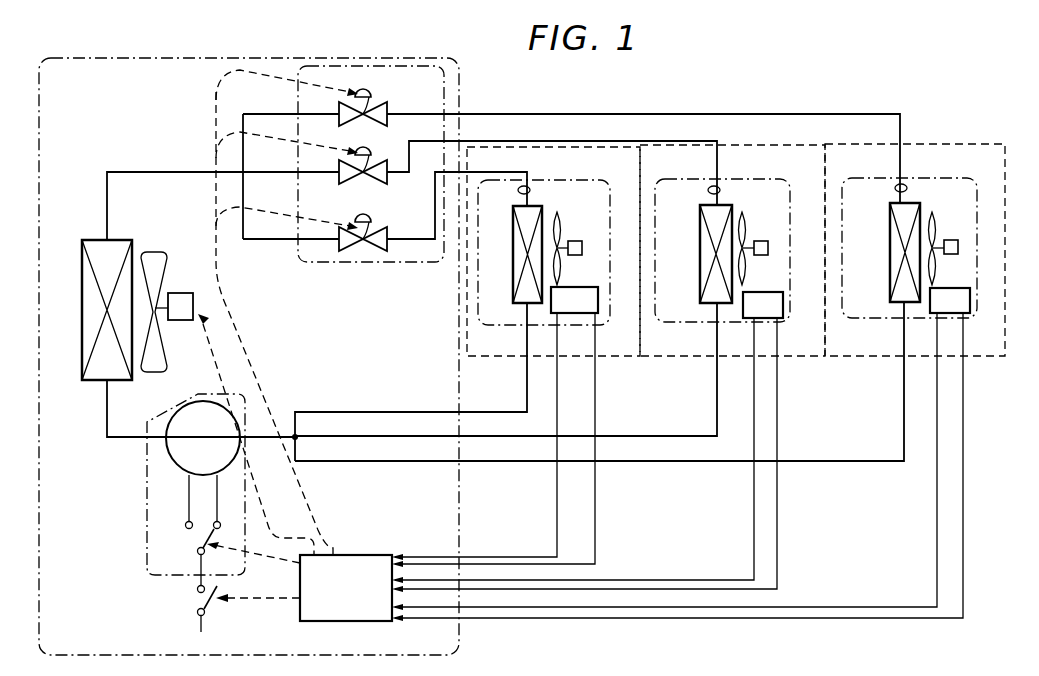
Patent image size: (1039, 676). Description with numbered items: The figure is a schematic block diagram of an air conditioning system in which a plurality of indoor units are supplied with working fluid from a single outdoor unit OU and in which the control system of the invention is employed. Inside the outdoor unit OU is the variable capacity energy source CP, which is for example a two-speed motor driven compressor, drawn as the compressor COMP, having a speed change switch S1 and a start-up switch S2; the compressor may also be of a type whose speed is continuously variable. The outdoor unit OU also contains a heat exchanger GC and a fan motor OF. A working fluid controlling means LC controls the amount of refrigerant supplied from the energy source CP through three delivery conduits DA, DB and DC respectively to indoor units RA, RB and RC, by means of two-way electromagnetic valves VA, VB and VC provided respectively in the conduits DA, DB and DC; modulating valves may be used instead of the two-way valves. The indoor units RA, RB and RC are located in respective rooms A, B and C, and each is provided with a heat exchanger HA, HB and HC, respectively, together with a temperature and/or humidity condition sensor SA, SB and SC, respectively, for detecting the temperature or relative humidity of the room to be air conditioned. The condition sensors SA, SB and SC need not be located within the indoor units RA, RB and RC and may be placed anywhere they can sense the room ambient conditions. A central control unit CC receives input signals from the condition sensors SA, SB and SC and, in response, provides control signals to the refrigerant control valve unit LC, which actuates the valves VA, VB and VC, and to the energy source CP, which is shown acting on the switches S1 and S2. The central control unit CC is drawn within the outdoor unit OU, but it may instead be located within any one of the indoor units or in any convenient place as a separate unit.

The outdoor unit OU is at (501, 356).
The heat exchanger GC is at (89, 310).
The fan motor OF is at (167, 297).
The working fluid controlling means LC is at (381, 264).
The two-way electromagnetic valve VA is at (367, 224).
The two-way electromagnetic valve VB is at (365, 158).
The two-way electromagnetic valve VC is at (363, 98).
The variable capacity energy source CP is at (147, 488).
The compressor COMP is at (203, 438).
The speed change switch S1 is at (196, 550).
The start-up switch S2 is at (205, 600).
The central control unit CC is at (580, 345).
The delivery conduit DA is at (497, 172).
The delivery conduit DB is at (467, 141).
The delivery conduit DC is at (486, 113).
The room A is at (603, 357).
The room B is at (786, 357).
The room C is at (985, 356).
The indoor unit RA is at (563, 180).
The indoor unit RB is at (740, 179).
The indoor unit RC is at (922, 178).
The heat exchanger HA is at (506, 254).
The heat exchanger HB is at (693, 254).
The heat exchanger HC is at (881, 252).
The condition sensor SA is at (574, 300).
The condition sensor SB is at (763, 305).
The condition sensor SC is at (950, 300).